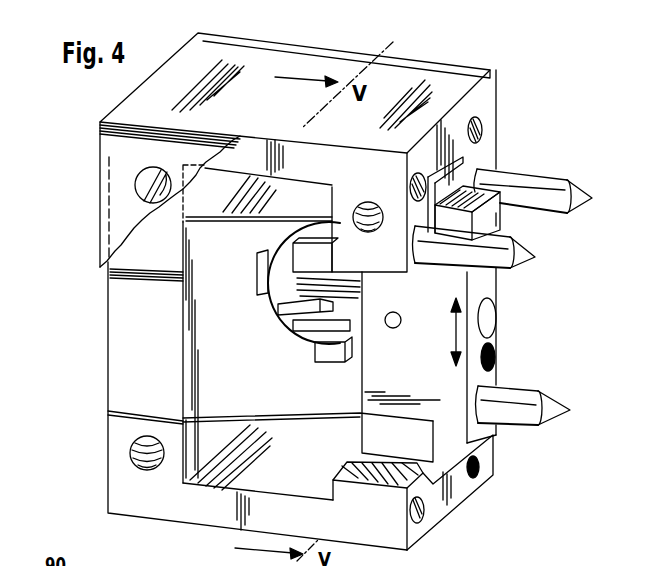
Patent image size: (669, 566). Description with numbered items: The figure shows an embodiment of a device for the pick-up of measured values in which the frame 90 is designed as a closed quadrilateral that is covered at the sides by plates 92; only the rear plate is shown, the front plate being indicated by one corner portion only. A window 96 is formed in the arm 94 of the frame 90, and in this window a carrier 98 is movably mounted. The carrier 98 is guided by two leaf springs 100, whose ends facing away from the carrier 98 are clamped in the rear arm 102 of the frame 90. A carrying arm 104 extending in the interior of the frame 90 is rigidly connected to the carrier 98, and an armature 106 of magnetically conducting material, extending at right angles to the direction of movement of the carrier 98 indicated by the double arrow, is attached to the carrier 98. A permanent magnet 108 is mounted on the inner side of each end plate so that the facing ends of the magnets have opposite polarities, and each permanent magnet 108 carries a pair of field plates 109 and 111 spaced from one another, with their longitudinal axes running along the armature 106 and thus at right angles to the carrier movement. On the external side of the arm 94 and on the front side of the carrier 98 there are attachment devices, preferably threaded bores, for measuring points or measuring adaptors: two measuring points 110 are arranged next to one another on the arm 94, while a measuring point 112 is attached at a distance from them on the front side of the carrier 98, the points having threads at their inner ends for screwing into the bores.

The frame 90 is at (407, 70).
The plates 92 is at (473, 70).
The arm 94 is at (480, 162).
The window 96 is at (466, 149).
The carrier 98 is at (498, 342).
The leaf springs 100 is at (300, 206).
The rear arm 102 is at (128, 302).
The carrying arm 104 is at (353, 302).
The upper bar 106 is at (290, 304).
The permanent magnet 108 is at (355, 332).
The field plate 109 is at (332, 240).
The measuring points 110 is at (553, 213).
The field plate 111 is at (295, 332).
The measuring point 112 is at (518, 408).